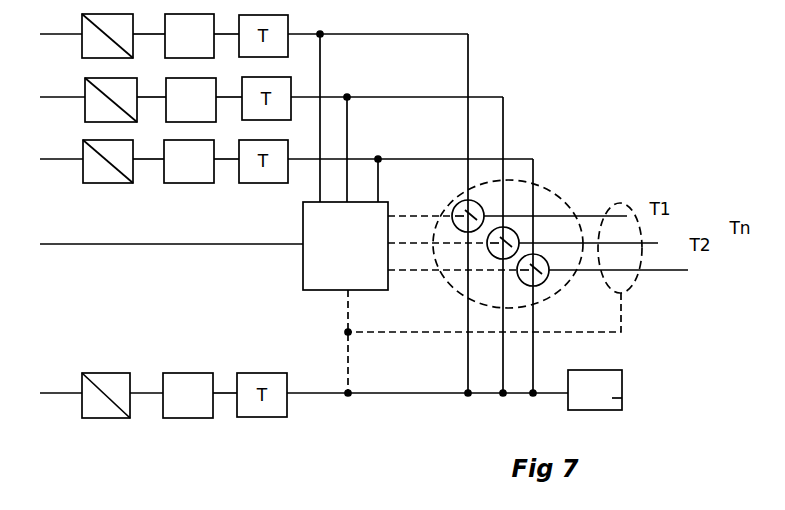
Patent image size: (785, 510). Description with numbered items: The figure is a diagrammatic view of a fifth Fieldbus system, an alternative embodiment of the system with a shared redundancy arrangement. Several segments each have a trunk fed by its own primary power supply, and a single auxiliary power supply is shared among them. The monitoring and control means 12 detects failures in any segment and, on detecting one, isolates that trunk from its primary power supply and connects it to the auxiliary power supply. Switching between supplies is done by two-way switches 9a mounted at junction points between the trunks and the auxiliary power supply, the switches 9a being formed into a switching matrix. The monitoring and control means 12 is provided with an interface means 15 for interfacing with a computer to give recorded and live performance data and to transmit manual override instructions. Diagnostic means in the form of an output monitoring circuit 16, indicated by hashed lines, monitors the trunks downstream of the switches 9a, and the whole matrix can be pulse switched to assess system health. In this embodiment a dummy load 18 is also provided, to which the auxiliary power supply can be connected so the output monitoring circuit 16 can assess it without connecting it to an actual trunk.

The two-way switches 9a is at (552, 195).
The monitoring and control means 12 is at (303, 290).
The interface means 15 is at (167, 244).
The output monitoring circuit 16 is at (590, 333).
The dummy load 18 is at (622, 398).